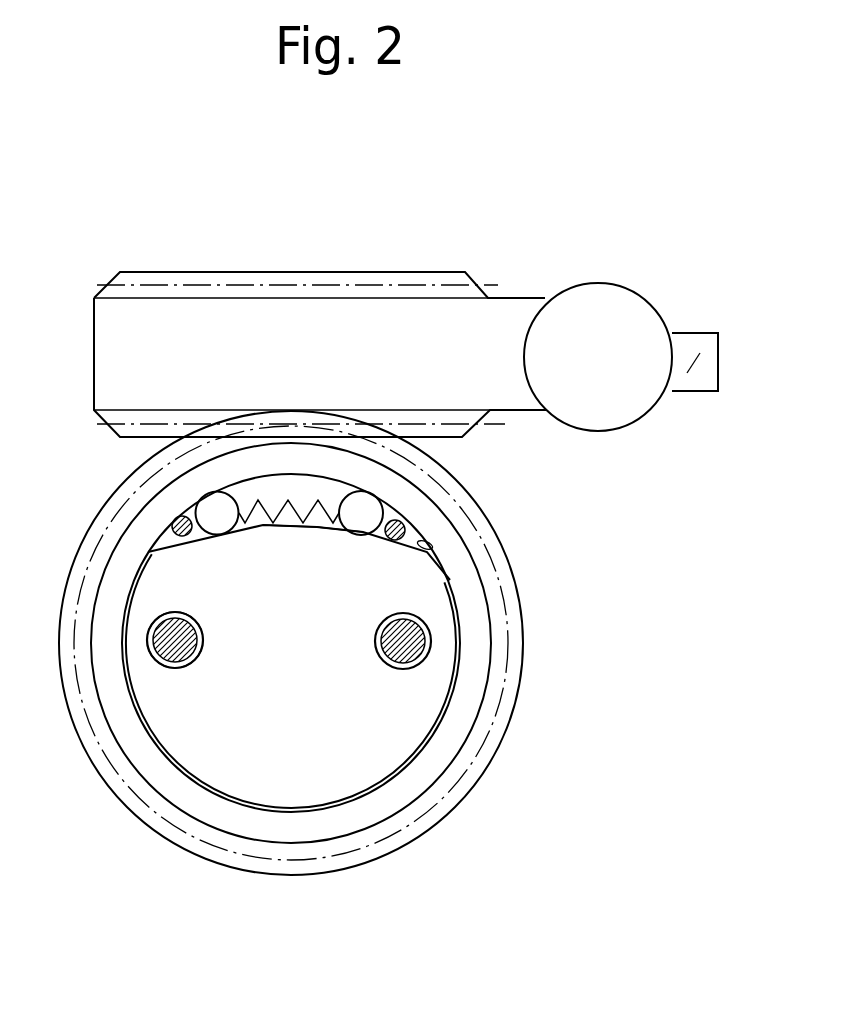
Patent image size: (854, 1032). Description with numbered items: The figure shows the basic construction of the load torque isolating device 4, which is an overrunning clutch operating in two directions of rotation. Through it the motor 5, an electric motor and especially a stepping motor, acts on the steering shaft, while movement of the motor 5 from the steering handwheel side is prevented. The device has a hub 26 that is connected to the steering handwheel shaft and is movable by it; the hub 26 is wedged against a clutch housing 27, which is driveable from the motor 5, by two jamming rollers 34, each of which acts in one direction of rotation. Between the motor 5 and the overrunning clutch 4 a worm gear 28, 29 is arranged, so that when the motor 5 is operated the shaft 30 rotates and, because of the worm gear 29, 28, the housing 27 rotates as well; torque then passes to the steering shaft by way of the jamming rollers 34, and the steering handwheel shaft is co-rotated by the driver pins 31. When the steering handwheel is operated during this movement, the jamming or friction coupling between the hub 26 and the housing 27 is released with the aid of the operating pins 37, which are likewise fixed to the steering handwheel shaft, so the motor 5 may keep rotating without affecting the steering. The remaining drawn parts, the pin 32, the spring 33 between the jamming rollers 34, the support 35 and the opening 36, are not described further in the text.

The load torque isolating device 4 is at (223, 918).
The motor 5 is at (606, 281).
The hub 26 is at (175, 750).
The clutch housing 27 is at (353, 823).
The worm gear 28 is at (417, 827).
The worm gear 29 is at (143, 278).
The shaft 30 is at (395, 318).
The driver pins 31 is at (182, 648).
The pin 32 is at (203, 630).
The spring 33 is at (270, 488).
The jamming rollers 34 is at (218, 513).
The support plate 35 is at (310, 527).
The opening 36 is at (434, 545).
The operating pins 37 is at (173, 519).